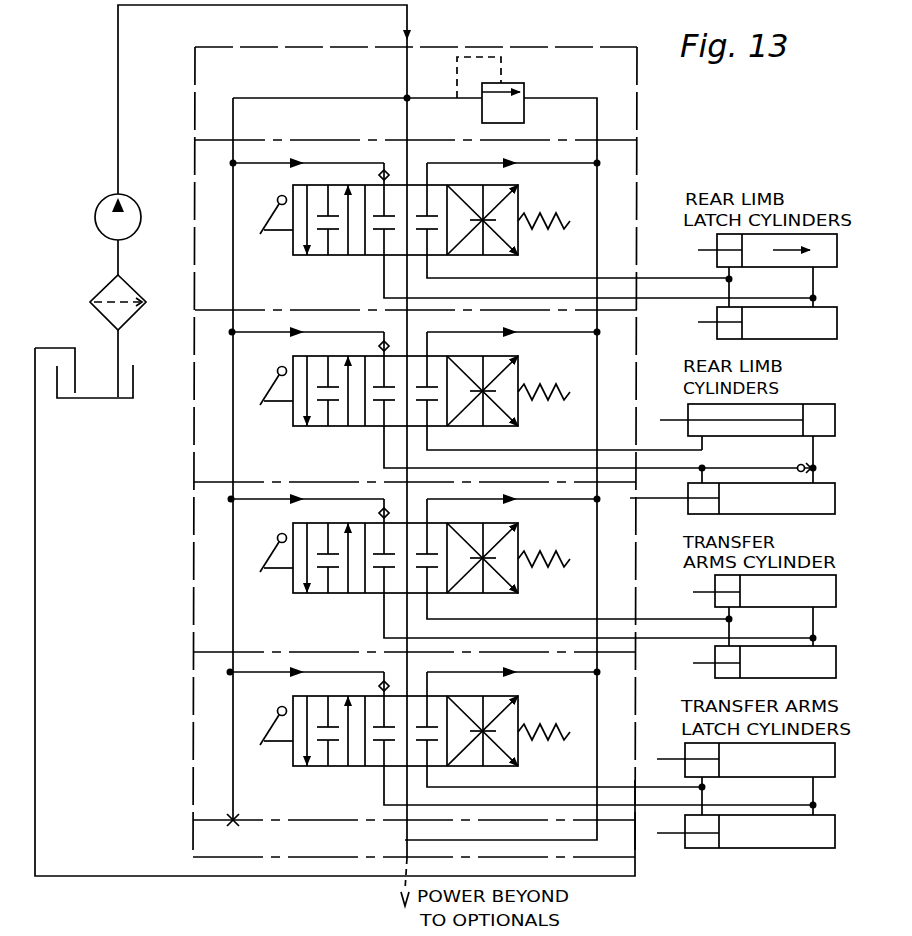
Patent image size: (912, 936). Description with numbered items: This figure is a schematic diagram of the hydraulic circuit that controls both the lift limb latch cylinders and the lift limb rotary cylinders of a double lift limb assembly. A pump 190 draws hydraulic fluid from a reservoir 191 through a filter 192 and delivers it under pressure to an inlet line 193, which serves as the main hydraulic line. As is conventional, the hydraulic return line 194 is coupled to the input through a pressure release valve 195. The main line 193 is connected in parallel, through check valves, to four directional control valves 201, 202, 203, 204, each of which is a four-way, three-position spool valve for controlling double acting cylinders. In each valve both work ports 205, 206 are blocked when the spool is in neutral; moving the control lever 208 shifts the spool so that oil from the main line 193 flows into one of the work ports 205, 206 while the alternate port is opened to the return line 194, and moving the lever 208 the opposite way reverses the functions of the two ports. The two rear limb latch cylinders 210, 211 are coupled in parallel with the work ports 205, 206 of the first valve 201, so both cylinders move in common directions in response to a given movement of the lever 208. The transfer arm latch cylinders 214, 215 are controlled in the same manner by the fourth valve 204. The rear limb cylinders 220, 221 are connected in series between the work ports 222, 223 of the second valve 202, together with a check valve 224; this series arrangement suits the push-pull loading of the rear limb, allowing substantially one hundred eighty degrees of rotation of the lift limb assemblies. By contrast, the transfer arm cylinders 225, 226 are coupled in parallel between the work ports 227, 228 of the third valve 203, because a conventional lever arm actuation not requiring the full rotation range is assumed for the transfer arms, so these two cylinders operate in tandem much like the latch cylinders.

The pump 190 is at (102, 200).
The reservoir 191 is at (128, 378).
The filter 192 is at (100, 290).
The inlet line 193 is at (408, 25).
The hydraulic return line 194 is at (33, 518).
The pressure release valve 195 is at (512, 83).
The directional control valve 201 is at (522, 233).
The directional control valve 202 is at (380, 338).
The directional control valve 203 is at (521, 569).
The directional control valve 204 is at (326, 772).
The work port 205 is at (430, 263).
The work port 206 is at (384, 209).
The control lever 208 is at (256, 236).
The rear limb latch cylinder 210 is at (717, 240).
The rear limb latch cylinder 211 is at (717, 318).
The transfer arm latch cylinder 214 is at (770, 773).
The transfer arm latch cylinder 215 is at (770, 846).
The rear limb cylinder 220 is at (693, 410).
The rear limb cylinder 221 is at (697, 508).
The work port 222 is at (382, 450).
The work port 223 is at (428, 446).
The check valve 224 is at (800, 468).
The transfer arm cylinder 225 is at (716, 585).
The transfer arm cylinder 226 is at (716, 665).
The work port 227 is at (574, 617).
The work port 228 is at (382, 620).